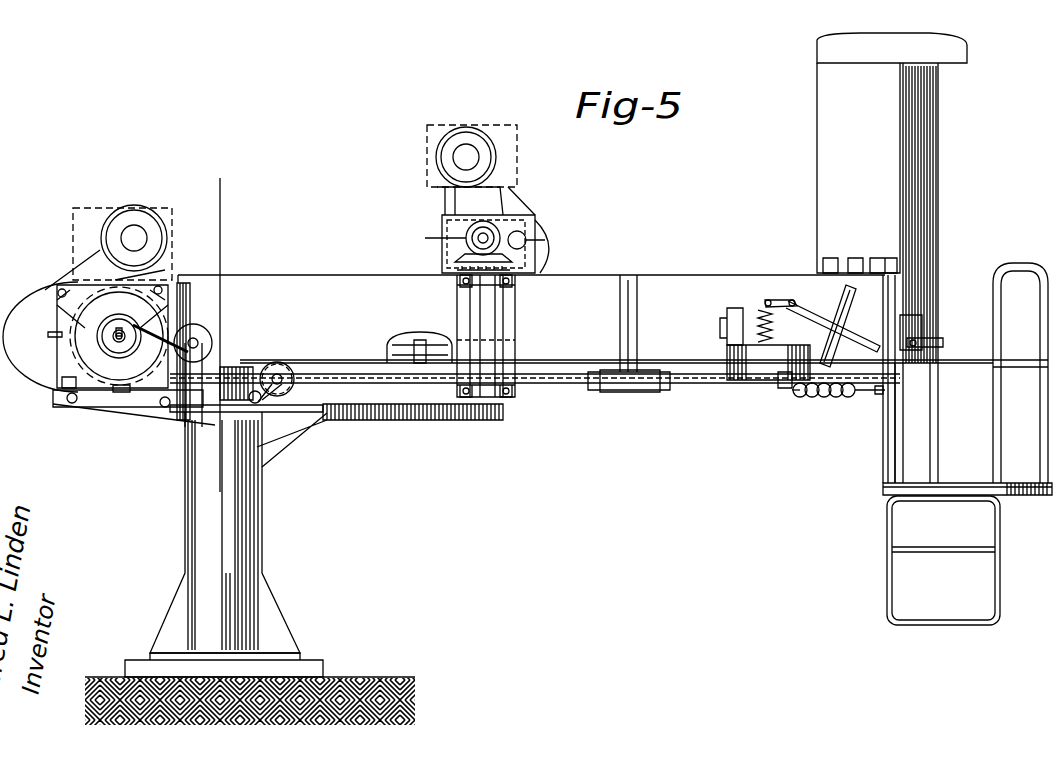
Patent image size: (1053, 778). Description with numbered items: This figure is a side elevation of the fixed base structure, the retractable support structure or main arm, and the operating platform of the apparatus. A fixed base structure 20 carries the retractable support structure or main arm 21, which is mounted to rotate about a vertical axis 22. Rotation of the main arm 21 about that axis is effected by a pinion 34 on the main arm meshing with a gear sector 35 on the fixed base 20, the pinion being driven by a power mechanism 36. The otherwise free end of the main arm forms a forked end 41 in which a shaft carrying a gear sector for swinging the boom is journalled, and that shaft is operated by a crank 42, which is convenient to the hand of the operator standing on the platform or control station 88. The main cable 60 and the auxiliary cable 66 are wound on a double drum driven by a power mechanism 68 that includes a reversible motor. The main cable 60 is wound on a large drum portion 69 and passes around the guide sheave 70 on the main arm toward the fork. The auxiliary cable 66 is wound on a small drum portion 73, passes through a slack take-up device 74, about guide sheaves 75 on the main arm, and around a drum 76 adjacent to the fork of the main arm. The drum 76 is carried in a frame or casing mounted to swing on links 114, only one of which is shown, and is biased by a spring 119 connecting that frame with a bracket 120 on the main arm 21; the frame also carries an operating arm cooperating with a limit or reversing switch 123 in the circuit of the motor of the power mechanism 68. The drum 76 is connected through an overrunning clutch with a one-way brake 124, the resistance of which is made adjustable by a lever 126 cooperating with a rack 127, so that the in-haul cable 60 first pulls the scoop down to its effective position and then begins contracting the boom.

The fixed base structure 20 is at (262, 510).
The retractable support structure or main arm 21 is at (330, 282).
The vertical axis 22 is at (221, 231).
The pinion 34 is at (503, 413).
The gear sector 35 is at (395, 422).
The power mechanism 36 is at (426, 172).
The forked end 41 is at (935, 160).
The crank 42 is at (927, 330).
The main cable 60 is at (535, 385).
The auxiliary cable 66 is at (243, 358).
The power mechanism 68 is at (142, 215).
The large drum portion 69 is at (176, 292).
The guide sheave 70 is at (598, 392).
The small drum portion 73 is at (111, 352).
The slack take-up device 74 is at (212, 340).
The guide sheaves 75 is at (292, 386).
The drum 76 is at (728, 381).
The platform or control station 88 is at (937, 493).
The links 114 is at (782, 390).
The spring 119 is at (822, 398).
The bracket 120 is at (880, 394).
The limit or reversing switch 123 is at (727, 325).
The one-way brake 124 is at (775, 348).
The lever 126 is at (806, 308).
The rack 127 is at (850, 320).